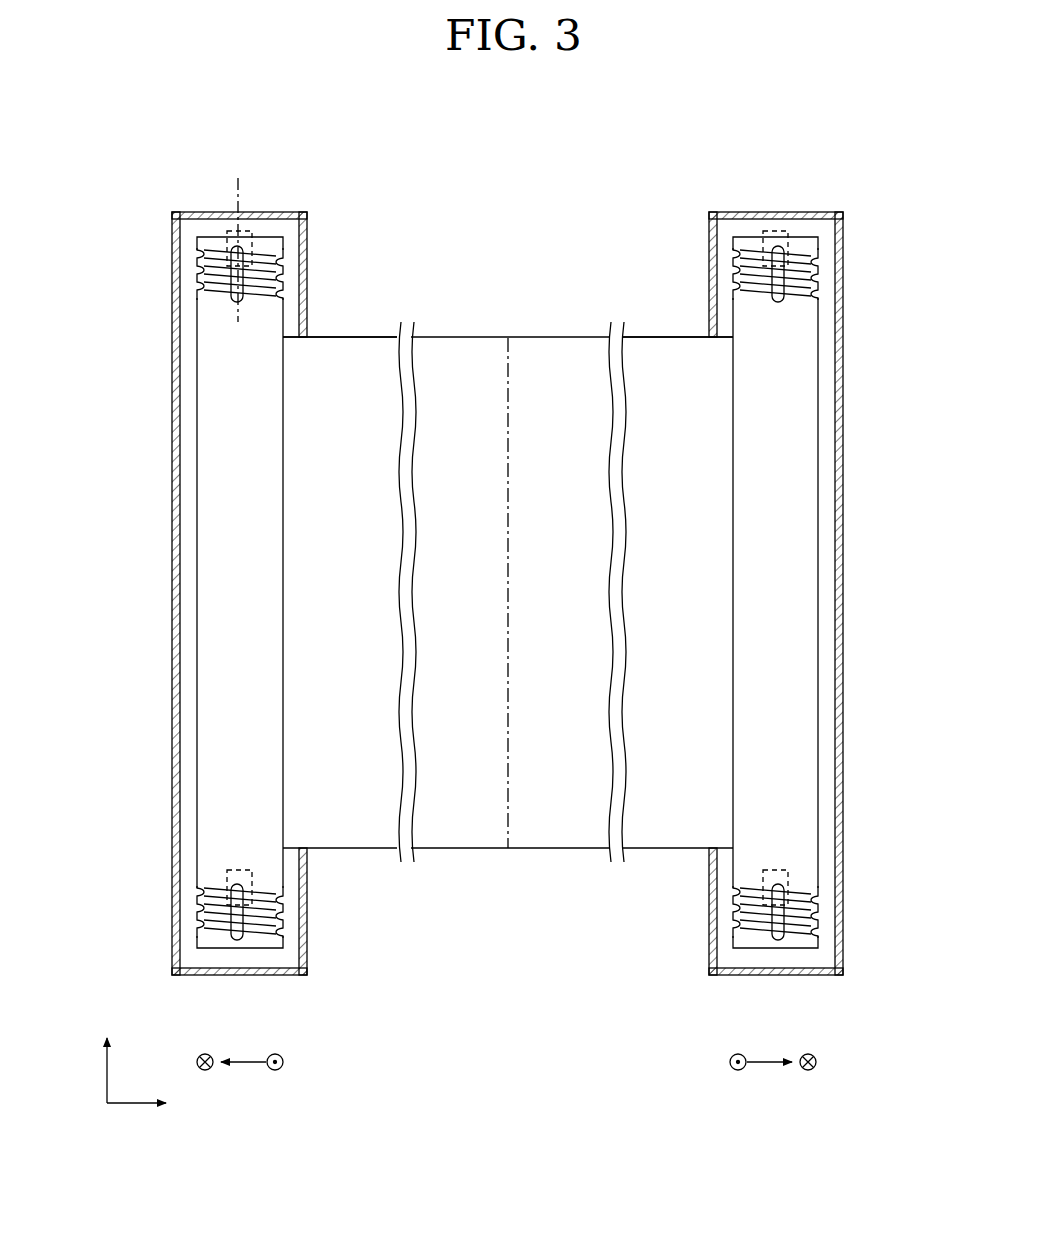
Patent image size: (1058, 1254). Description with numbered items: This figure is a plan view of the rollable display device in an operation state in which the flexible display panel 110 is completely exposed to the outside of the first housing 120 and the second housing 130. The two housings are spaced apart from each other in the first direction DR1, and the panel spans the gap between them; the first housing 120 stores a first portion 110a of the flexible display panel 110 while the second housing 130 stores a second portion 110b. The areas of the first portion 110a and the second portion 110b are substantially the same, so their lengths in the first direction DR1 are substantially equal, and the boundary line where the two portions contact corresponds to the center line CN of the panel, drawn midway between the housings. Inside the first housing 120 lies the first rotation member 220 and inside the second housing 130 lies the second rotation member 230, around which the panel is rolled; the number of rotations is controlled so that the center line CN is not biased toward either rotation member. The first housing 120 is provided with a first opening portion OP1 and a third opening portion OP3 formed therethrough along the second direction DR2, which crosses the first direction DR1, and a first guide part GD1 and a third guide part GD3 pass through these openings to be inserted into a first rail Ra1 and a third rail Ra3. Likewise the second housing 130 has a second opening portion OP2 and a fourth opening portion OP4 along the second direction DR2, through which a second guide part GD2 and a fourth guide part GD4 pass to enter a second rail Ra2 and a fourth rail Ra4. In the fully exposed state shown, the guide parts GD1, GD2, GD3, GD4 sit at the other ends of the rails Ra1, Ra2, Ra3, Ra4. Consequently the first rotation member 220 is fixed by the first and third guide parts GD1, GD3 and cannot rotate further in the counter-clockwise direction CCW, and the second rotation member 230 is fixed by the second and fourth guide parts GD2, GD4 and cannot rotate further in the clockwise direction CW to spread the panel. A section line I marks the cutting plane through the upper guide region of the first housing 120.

The flexible display panel 110 is at (544, 851).
The first portion 110a is at (452, 348).
The second portion 110b is at (556, 348).
The center line CN is at (519, 350).
The first housing 120 is at (245, 975).
The second housing 130 is at (785, 975).
The first rotation member 220 is at (208, 592).
The second rotation member 230 is at (808, 582).
The first guide part GD1 is at (226, 872).
The second guide part GD2 is at (789, 872).
The third guide part GD3 is at (241, 230).
The fourth guide part GD4 is at (783, 230).
The first rail Ra1 is at (200, 905).
The second rail Ra2 is at (816, 905).
The third rail Ra3 is at (200, 250).
The fourth rail Ra4 is at (816, 250).
The first opening portion OP1 is at (200, 930).
The second opening portion OP2 is at (816, 930).
The third opening portion OP3 is at (200, 270).
The fourth opening portion OP4 is at (816, 270).
The section line I-I' I is at (232, 190).
The first direction DR1 is at (158, 1103).
The second direction DR2 is at (107, 1053).
The counter-clockwise direction CCW is at (244, 1068).
The clockwise direction CW is at (774, 1068).